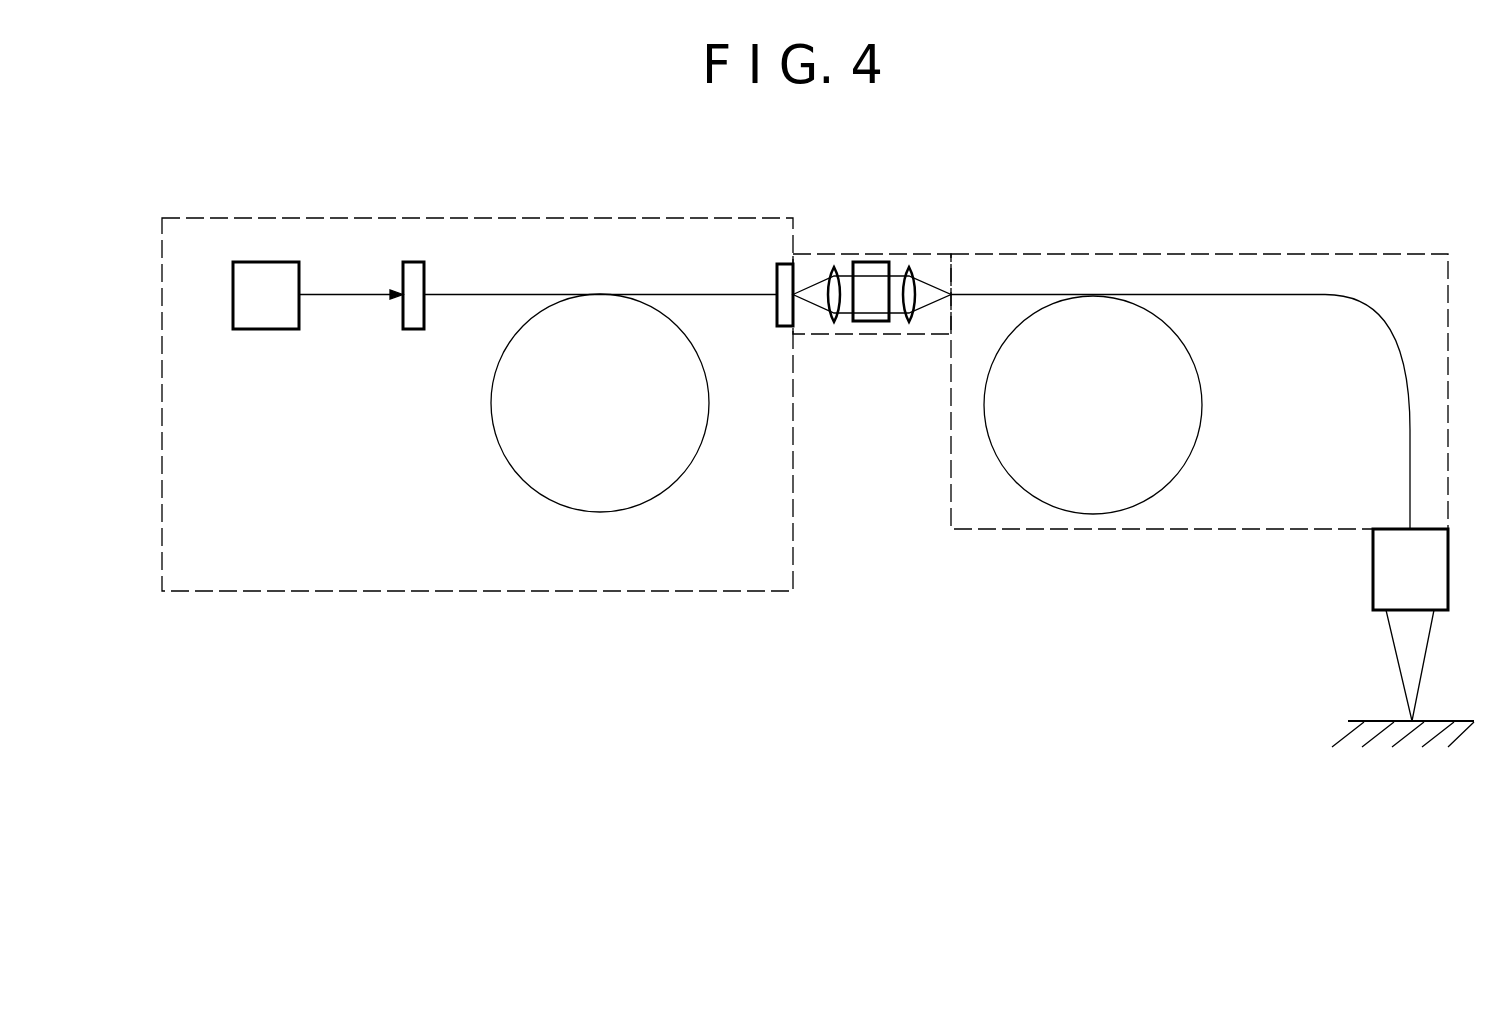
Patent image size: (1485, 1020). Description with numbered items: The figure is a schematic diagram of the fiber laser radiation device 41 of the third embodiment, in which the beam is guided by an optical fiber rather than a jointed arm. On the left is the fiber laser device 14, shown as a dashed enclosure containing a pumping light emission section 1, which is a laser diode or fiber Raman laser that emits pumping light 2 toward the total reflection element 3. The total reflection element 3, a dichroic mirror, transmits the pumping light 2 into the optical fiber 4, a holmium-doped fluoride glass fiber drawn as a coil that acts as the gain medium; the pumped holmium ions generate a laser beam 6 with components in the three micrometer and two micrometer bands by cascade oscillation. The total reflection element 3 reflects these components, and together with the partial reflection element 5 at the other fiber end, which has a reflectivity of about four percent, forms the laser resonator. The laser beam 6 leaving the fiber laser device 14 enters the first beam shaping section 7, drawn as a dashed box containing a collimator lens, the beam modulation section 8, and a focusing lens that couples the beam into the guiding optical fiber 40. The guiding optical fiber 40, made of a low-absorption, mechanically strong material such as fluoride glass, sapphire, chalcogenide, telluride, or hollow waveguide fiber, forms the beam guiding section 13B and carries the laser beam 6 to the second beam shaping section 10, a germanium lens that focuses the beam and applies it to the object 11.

The pumping light emission section 1 is at (268, 262).
The pumping light 2 is at (350, 297).
The total reflection element 3 is at (426, 262).
The optical fiber 4 is at (528, 486).
The partial reflection element 5 is at (778, 262).
The laser beam 6 is at (900, 322).
The first beam shaping section 7 is at (865, 253).
The beam modulation section 8 is at (861, 322).
The second beam shaping section 10 is at (1373, 580).
The object 11 is at (1375, 720).
The beam guiding section 13B is at (1060, 531).
The fiber laser device 14 is at (323, 593).
The guiding optical fiber 40 is at (1011, 294).
The fiber laser radiation device 41 is at (1134, 165).